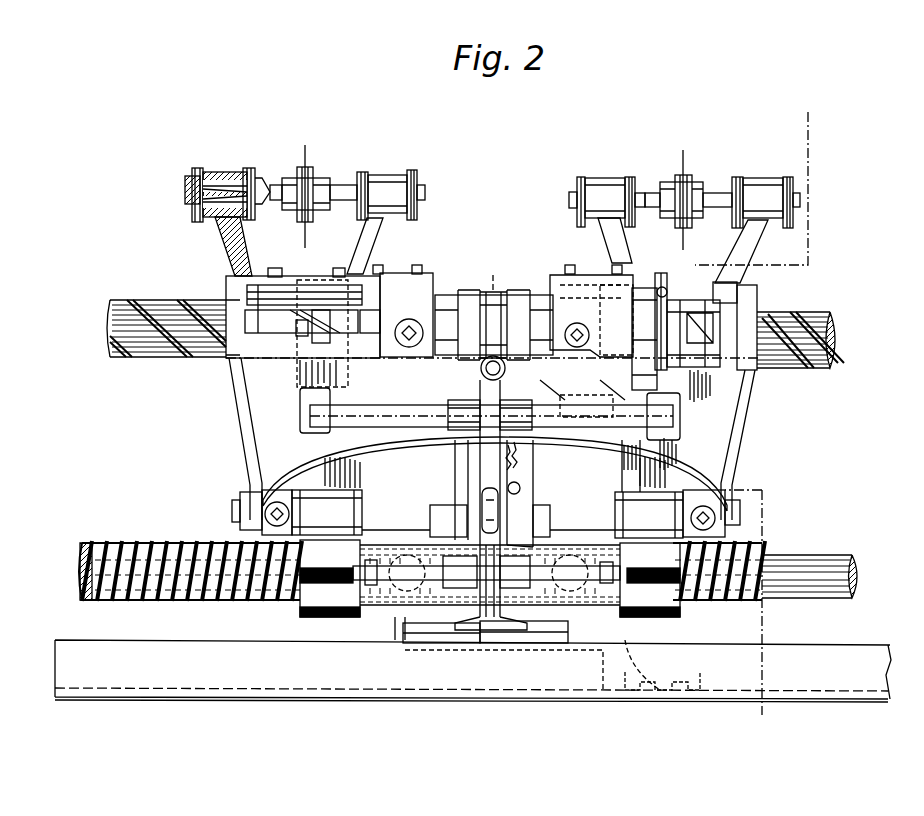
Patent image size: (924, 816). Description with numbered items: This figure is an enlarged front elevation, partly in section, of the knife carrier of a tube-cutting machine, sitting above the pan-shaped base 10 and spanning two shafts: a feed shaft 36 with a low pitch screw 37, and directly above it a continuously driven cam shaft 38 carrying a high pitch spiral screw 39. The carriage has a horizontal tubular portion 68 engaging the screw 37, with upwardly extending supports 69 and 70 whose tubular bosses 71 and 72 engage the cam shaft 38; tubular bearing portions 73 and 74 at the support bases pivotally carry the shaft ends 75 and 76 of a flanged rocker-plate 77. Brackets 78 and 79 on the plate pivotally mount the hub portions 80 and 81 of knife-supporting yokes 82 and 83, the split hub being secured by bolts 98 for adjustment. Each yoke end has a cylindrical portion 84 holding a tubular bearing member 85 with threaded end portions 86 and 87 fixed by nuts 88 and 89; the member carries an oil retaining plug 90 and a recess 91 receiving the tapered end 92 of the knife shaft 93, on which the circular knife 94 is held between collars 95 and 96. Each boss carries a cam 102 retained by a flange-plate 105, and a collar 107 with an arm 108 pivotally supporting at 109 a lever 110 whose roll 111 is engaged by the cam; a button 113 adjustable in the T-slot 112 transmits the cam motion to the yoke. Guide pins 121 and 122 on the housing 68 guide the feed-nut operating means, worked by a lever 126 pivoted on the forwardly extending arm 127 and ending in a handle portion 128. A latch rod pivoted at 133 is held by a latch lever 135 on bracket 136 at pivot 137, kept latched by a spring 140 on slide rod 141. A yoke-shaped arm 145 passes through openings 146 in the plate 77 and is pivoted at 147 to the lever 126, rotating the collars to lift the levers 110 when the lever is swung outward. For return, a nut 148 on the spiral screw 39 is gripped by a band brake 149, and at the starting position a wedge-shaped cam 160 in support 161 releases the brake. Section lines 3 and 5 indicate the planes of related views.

The pan-shaped base 10 is at (473, 671).
The feed shaft 36 is at (800, 600).
The low pitch screw 37 is at (195, 600).
The cam shaft 38 is at (165, 312).
The high pitch spiral screw 39 is at (150, 357).
The horizontal tubular portion 68 is at (330, 612).
The upwardly extending support 69 is at (355, 480).
The upwardly extending support 70 is at (620, 481).
The tubular boss 71 is at (412, 283).
The tubular boss 72 is at (562, 276).
The tubular bearing portion 73 is at (345, 512).
The tubular bearing portion 74 is at (615, 514).
The shaft end 75 is at (236, 510).
The shaft end 76 is at (742, 519).
The rocker-plate 77 is at (244, 452).
The bracket 78 is at (235, 340).
The bracket 79 is at (748, 357).
The hub portion 80 is at (290, 281).
The hub portion 81 is at (720, 283).
The knife-supporting yoke 82 is at (243, 258).
The knife-supporting yoke 83 is at (748, 250).
The cylindrical portion 84 is at (230, 172).
The tubular bearing member 85 is at (218, 172).
The reduced threaded end portion 86 is at (193, 178).
The reduced threaded end portion 87 is at (258, 182).
The nut 88 is at (199, 168).
The nut 89 is at (250, 168).
The oil retaining plug 90 is at (186, 190).
The recess 91 is at (255, 212).
The tapered end 92 is at (262, 190).
The knife shaft 93 is at (262, 200).
The circular knife 94 is at (307, 152).
The collar 95 is at (292, 212).
The collar 96 is at (312, 220).
The bolt 98 is at (278, 270).
The cam 102 is at (692, 278).
The flange-plate 105 is at (395, 283).
The collar 107 is at (635, 310).
The arm 108 is at (376, 330).
The pivot 109 is at (690, 386).
The lever 110 is at (322, 342).
The roll 111 is at (300, 333).
The T-slot 112 is at (660, 288).
The button 113 is at (666, 285).
The guide pin 121 is at (405, 632).
The guide pin 122 is at (585, 645).
The lever 126 is at (497, 664).
The forwardly extending arm 127 is at (430, 645).
The handle portion 128 is at (481, 368).
The pivot 133 is at (455, 507).
The latch lever 135 is at (525, 478).
The bracket 136 is at (457, 483).
The pivot 137 is at (519, 490).
The spring 140 is at (520, 450).
The slide rod 141 is at (519, 453).
The yoke-shaped arm 145 is at (430, 410).
The opening 146 is at (300, 412).
The pivot 147 is at (455, 422).
The nut 148 is at (460, 292).
The band brake 149 is at (490, 292).
The wedge-shaped cam 160 is at (580, 397).
The support 161 is at (640, 640).
The section line 3 is at (762, 745).
The section line 5 is at (538, 389).